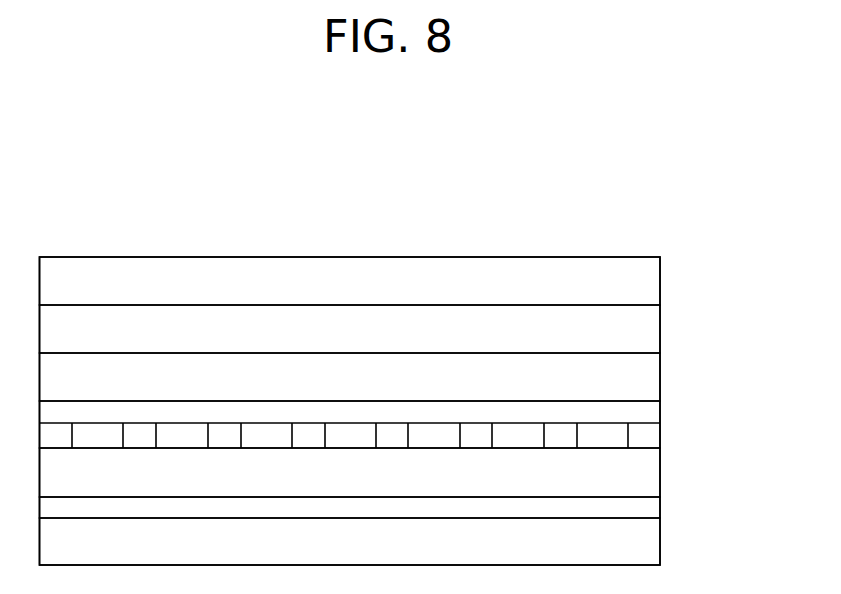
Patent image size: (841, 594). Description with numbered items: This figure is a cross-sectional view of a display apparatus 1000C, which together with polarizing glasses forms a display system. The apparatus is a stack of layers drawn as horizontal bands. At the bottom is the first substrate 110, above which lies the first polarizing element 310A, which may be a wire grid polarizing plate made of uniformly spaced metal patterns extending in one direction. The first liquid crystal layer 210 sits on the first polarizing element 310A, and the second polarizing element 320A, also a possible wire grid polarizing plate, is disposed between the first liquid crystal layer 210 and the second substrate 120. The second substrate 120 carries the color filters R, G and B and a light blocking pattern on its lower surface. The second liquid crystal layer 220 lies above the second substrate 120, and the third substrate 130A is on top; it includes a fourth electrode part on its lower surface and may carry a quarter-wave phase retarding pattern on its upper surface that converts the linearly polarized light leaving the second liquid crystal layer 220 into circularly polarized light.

The display apparatus 1000C is at (312, 184).
The third substrate 130A is at (660, 273).
The second liquid crystal layer 220 is at (660, 326).
The second substrate 120 is at (660, 373).
The second polarizing element 320A is at (660, 407).
The first liquid crystal layer 210 is at (660, 470).
The first polarizing element 310A is at (660, 505).
The first substrate 110 is at (660, 551).